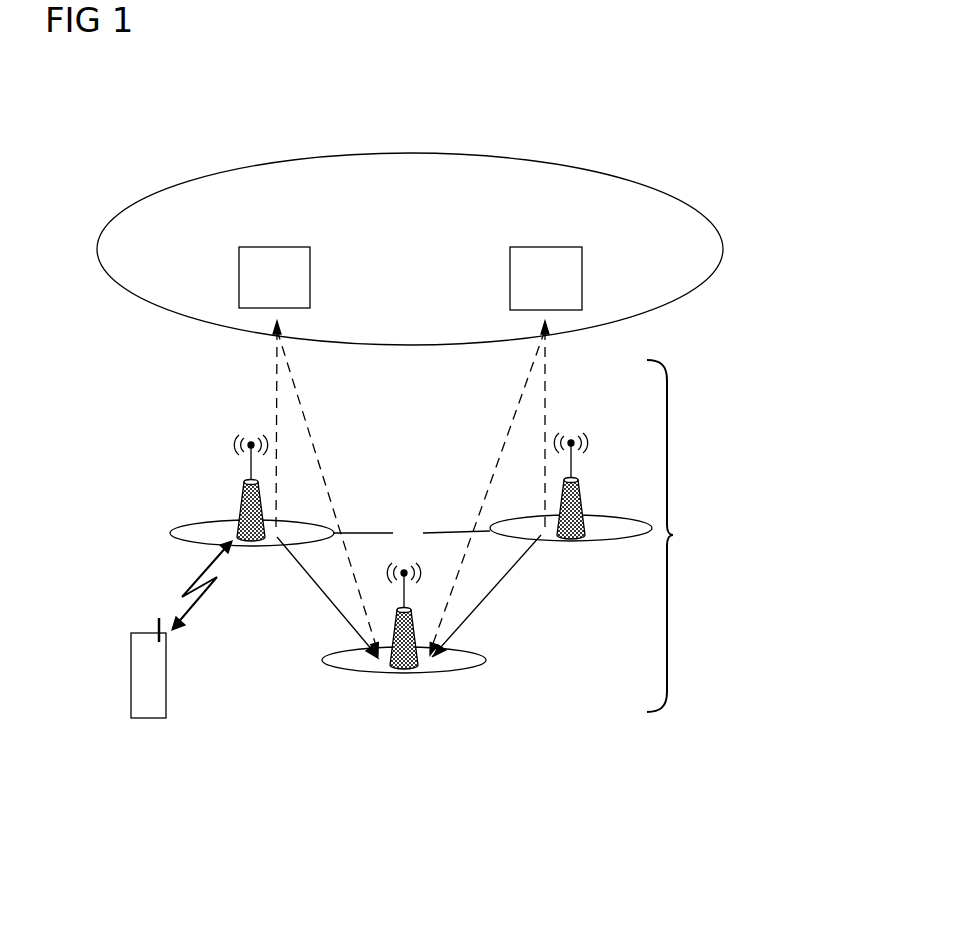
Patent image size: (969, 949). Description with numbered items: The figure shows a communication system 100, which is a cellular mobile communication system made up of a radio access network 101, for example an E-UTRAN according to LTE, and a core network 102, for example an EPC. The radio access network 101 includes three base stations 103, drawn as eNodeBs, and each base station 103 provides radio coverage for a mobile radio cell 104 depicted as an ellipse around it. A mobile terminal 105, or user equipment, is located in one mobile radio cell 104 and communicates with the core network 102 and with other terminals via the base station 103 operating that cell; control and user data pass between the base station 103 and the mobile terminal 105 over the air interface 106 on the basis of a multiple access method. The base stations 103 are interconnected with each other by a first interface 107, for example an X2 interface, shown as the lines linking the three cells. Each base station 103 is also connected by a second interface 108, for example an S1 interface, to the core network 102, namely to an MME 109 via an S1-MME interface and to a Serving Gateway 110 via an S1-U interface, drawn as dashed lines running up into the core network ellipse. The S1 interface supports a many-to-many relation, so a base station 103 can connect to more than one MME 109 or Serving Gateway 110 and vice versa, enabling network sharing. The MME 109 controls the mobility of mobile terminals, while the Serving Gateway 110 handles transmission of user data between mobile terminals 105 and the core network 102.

The communication system 100 is at (699, 88).
The radio access network 101 is at (760, 515).
The core network 102 is at (713, 230).
The base station 103 is at (240, 490).
The mobile radio cell 104 is at (180, 542).
The mobile terminal 105 is at (150, 718).
The air interface 106 is at (215, 600).
The first interface 107 is at (412, 522).
The second interface 108 is at (275, 382).
The MME 109 is at (272, 247).
The Serving Gateway 110 is at (546, 247).